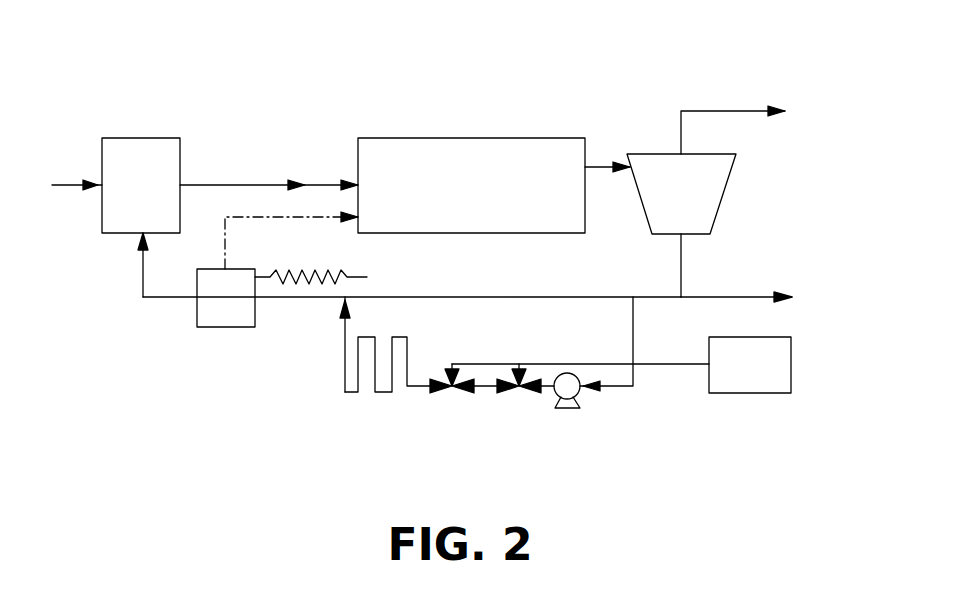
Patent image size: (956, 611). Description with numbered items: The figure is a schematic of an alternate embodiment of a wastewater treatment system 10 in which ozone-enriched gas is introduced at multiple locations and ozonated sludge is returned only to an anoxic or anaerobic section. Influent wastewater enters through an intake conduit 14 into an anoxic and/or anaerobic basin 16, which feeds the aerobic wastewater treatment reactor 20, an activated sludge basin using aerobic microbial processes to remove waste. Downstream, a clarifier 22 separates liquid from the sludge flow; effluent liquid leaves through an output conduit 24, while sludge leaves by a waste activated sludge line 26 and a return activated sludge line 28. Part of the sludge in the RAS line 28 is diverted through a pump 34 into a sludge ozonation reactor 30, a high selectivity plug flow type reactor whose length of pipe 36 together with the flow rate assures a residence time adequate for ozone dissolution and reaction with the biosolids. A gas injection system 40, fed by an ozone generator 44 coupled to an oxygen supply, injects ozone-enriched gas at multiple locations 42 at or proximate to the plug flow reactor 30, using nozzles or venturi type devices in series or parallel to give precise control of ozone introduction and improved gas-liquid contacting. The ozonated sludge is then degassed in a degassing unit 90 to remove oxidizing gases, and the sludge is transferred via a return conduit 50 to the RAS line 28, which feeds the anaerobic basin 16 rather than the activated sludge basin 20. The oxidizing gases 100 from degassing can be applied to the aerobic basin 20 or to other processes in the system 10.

The wastewater treatment system 10 is at (258, 110).
The intake conduit 14 is at (261, 185).
The anoxic and/or anaerobic basin 16 is at (143, 138).
The aerobic wastewater treatment reactor 20 is at (508, 138).
The clarifier 22 is at (718, 190).
The output conduit 24 is at (720, 111).
The waste activated sludge line 26 is at (735, 297).
The return activated sludge line 28 is at (545, 297).
The sludge ozonation reactor 30 is at (540, 336).
The pump 34 is at (572, 410).
The pipe 36 is at (410, 337).
The gas injection system 40 is at (706, 406).
The nozzles or venturi type devices 42 is at (508, 398).
The ozone generator 44 is at (782, 363).
The return conduit 50 is at (340, 334).
The degassing unit 90 is at (226, 328).
The oxidizing gases 100 is at (222, 229).